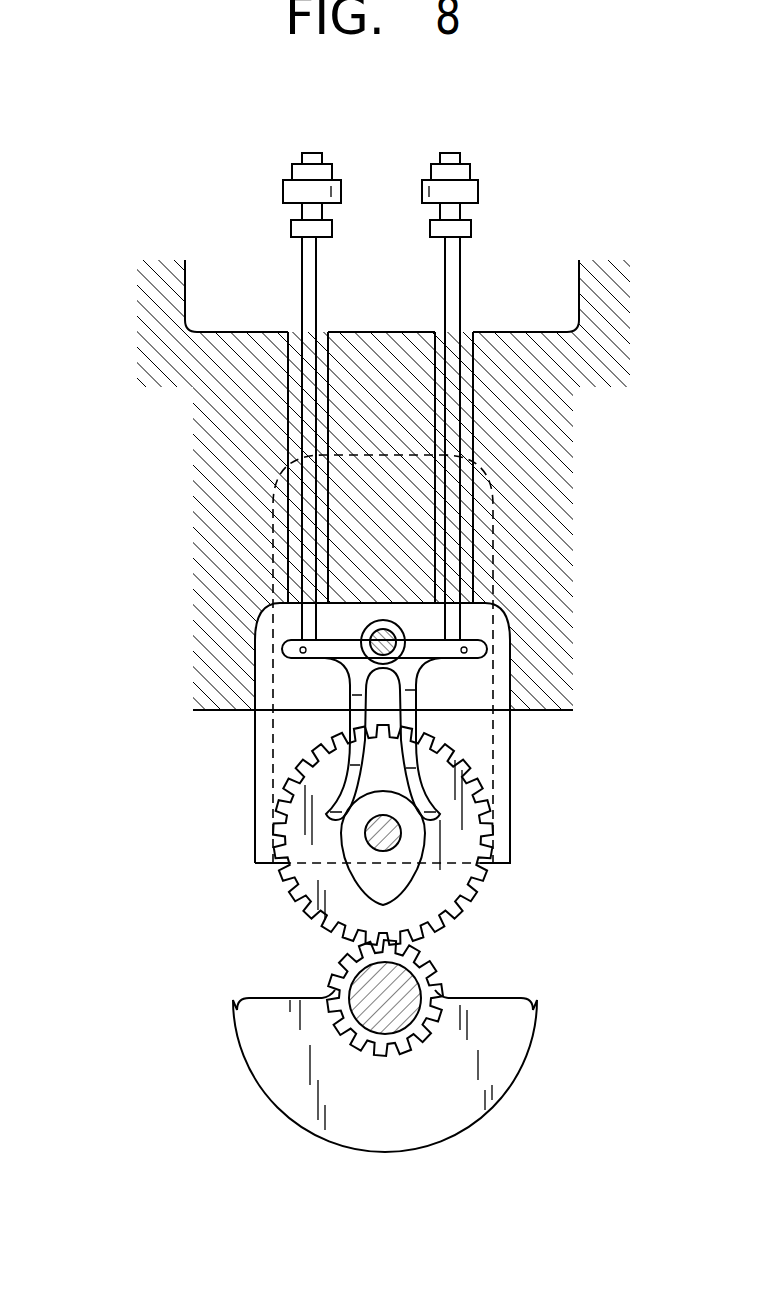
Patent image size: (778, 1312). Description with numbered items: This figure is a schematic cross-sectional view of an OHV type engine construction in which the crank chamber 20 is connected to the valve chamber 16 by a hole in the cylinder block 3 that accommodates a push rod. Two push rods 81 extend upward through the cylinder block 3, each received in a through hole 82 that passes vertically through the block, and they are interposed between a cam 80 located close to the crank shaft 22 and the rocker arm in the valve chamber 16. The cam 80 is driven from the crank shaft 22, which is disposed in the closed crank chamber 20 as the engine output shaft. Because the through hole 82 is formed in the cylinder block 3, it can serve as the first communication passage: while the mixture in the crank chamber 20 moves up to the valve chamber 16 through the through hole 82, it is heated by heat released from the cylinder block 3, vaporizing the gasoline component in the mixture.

The cylinder block 3 is at (538, 530).
The valve chamber 16 is at (525, 285).
The push rod 81 is at (310, 270).
The through hole 82 is at (293, 420).
The crank chamber 20 is at (533, 815).
The cam 80 is at (392, 875).
The crank shaft 22 is at (387, 990).